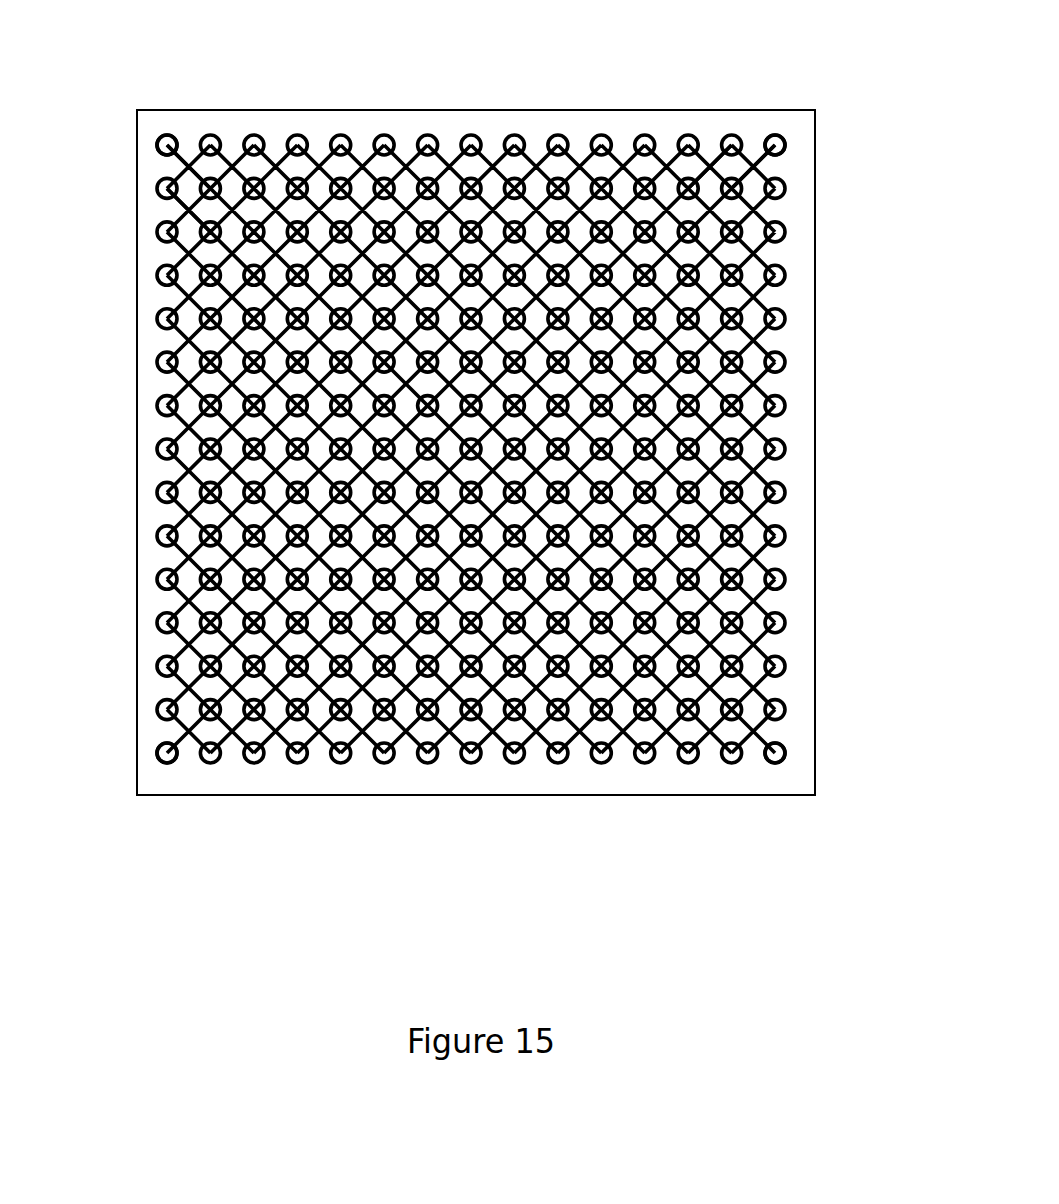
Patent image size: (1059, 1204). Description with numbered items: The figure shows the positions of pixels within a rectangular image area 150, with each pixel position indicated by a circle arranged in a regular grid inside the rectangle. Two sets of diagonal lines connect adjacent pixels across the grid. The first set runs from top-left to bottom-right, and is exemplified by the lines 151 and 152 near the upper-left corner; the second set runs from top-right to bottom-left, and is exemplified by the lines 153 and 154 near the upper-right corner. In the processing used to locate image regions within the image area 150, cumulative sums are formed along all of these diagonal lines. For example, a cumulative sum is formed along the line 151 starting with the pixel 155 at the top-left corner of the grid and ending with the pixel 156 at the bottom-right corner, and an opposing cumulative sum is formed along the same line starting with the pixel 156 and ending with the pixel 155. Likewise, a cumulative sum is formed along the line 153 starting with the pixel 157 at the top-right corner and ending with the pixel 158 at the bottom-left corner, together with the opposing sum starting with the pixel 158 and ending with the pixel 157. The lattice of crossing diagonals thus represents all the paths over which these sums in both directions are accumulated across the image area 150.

The rectangular image area 150 is at (209, 797).
The diagonal line of pixels 151 is at (177, 157).
The diagonal line of pixels 152 is at (177, 200).
The diagonal line of pixels 153 is at (758, 160).
The diagonal line of pixels 154 is at (718, 156).
The pixel 155 is at (167, 128).
The pixel 156 is at (776, 765).
The pixel 157 is at (786, 145).
The pixel 158 is at (152, 760).